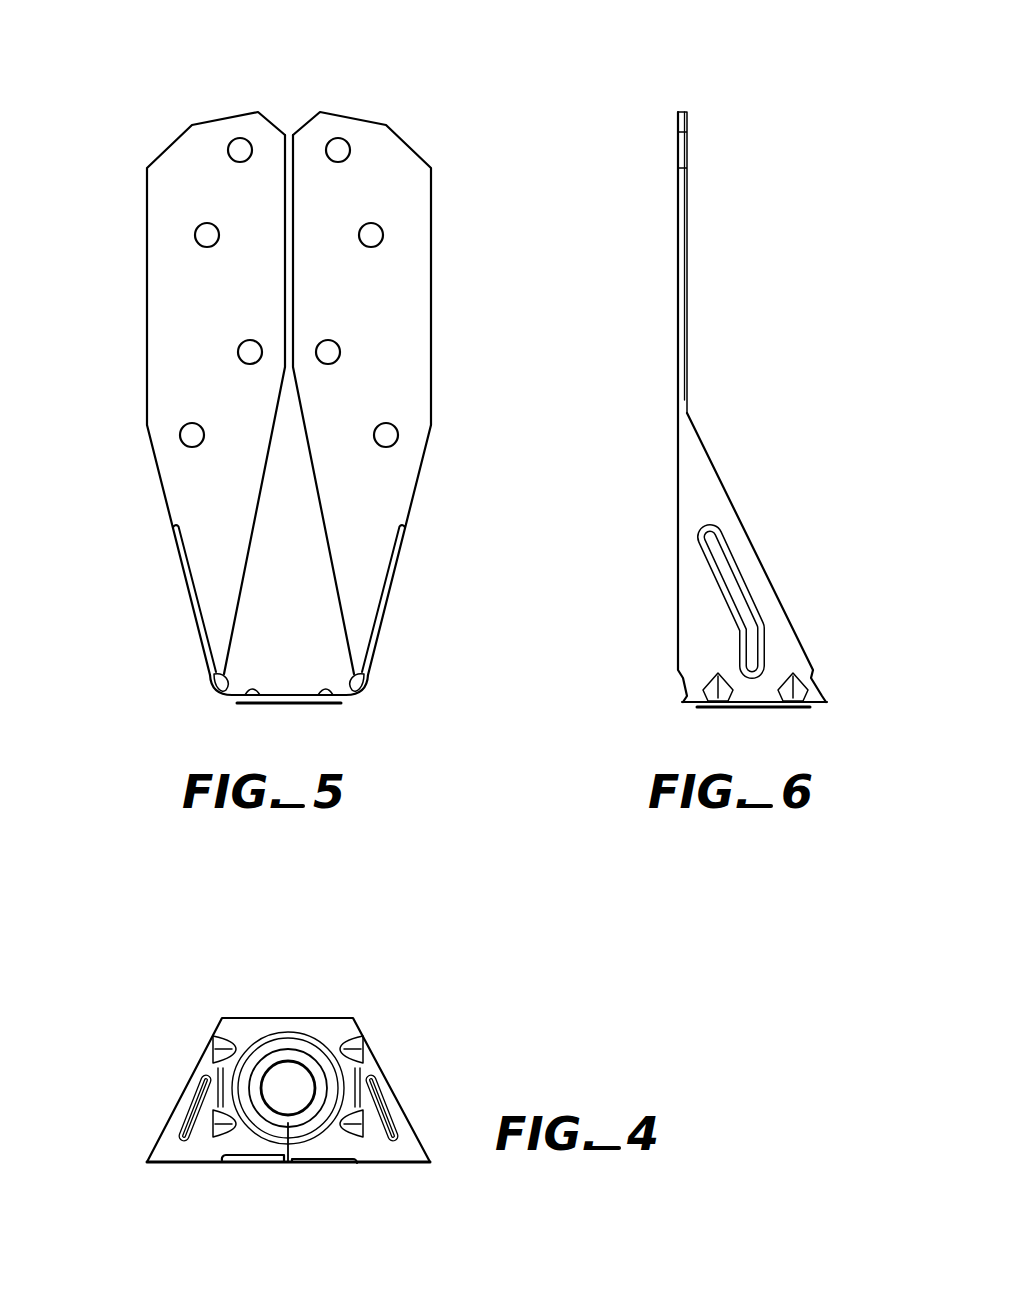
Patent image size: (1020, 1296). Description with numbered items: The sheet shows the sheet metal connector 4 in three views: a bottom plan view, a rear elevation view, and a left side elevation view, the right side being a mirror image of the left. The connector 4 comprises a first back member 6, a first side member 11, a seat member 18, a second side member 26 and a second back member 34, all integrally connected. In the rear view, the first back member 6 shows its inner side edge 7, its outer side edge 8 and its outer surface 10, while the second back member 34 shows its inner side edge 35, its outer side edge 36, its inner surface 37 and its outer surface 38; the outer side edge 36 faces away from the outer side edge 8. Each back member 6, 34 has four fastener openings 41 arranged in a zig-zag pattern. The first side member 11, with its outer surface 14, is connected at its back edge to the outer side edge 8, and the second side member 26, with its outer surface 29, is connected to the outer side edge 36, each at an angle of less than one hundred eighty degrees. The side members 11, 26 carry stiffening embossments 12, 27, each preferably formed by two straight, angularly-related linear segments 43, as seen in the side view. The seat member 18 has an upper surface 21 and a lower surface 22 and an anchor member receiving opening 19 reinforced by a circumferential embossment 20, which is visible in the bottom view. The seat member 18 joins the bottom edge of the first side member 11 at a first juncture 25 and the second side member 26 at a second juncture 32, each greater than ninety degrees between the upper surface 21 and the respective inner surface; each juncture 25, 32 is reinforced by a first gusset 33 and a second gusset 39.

In FIG. 5, the sheet metal connector 4 is at (333, 96).
In FIG. 6, the sheet metal connector 4 is at (723, 196).
In FIG. 4, the sheet metal connector 4 is at (406, 1052).
In FIG. 5, the first back member 6 is at (226, 110).
In FIG. 4, the first back member 6 is at (333, 1165).
In FIG. 5, the inner side edge 7 is at (287, 177).
In FIG. 5, the outer side edge 8 is at (147, 393).
In FIG. 5, the outer surface 10 is at (160, 320).
In FIG. 4, the outer surface 10 is at (250, 1164).
In FIG. 5, the first side member 11 is at (164, 515).
In FIG. 4, the first side member 11 is at (410, 1117).
In FIG. 5, the stiffening embossment 12 is at (174, 578).
In FIG. 4, the stiffening embossment 12 is at (385, 1105).
In FIG. 4, the outer surface 14 is at (405, 1152).
In FIG. 5, the seat member 18 is at (353, 711).
In FIG. 6, the seat member 18 is at (816, 708).
In FIG. 4, the seat member 18 is at (243, 1016).
In FIG. 4, the anchor member receiving opening 19 is at (288, 1061).
In FIG. 5, the circumferential embossment 20 is at (223, 706).
In FIG. 6, the circumferential embossment 20 is at (703, 708).
In FIG. 4, the circumferential embossment 20 is at (288, 1163).
In FIG. 5, the upper surface 21 is at (262, 705).
In FIG. 5, the lower surface 22 is at (230, 698).
In FIG. 6, the lower surface 22 is at (693, 706).
In FIG. 4, the lower surface 22 is at (328, 1033).
In FIG. 5, the first juncture 25 is at (210, 686).
In FIG. 5, the second side member 26 is at (418, 497).
In FIG. 6, the second side member 26 is at (787, 607).
In FIG. 4, the second side member 26 is at (180, 1090).
In FIG. 5, the stiffening embossment 27 is at (402, 562).
In FIG. 6, the stiffening embossment 27 is at (758, 660).
In FIG. 4, the stiffening embossment 27 is at (185, 1123).
In FIG. 5, the outer surface 29 is at (403, 342).
In FIG. 6, the outer surface 29 is at (698, 618).
In FIG. 4, the outer surface 29 is at (205, 1064).
In FIG. 5, the second juncture 32 is at (366, 686).
In FIG. 6, the first gusset 33 is at (793, 703).
In FIG. 4, the first gusset 33 is at (224, 1040).
In FIG. 5, the second back member 34 is at (409, 140).
In FIG. 6, the second back member 34 is at (675, 325).
In FIG. 4, the second back member 34 is at (162, 1166).
In FIG. 5, the inner side edge 35 is at (290, 148).
In FIG. 5, the outer side edge 36 is at (430, 277).
In FIG. 6, the outer side edge 36 is at (678, 252).
In FIG. 6, the inner surface 37 is at (688, 287).
In FIG. 5, the outer surface 38 is at (408, 390).
In FIG. 6, the outer surface 38 is at (678, 200).
In FIG. 5, the second gusset 39 is at (289, 684).
In FIG. 6, the second gusset 39 is at (727, 702).
In FIG. 4, the second gusset 39 is at (220, 1130).
In FIG. 5, the fastener openings 41 is at (244, 140).
In FIG. 6, the linear segments 43 is at (728, 577).